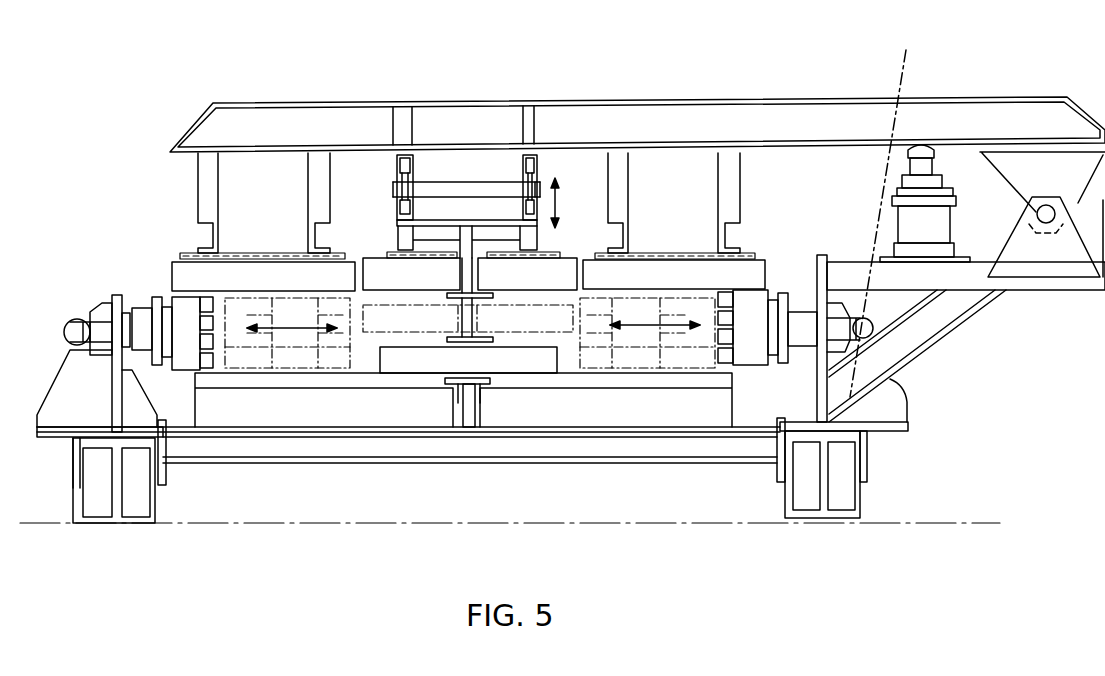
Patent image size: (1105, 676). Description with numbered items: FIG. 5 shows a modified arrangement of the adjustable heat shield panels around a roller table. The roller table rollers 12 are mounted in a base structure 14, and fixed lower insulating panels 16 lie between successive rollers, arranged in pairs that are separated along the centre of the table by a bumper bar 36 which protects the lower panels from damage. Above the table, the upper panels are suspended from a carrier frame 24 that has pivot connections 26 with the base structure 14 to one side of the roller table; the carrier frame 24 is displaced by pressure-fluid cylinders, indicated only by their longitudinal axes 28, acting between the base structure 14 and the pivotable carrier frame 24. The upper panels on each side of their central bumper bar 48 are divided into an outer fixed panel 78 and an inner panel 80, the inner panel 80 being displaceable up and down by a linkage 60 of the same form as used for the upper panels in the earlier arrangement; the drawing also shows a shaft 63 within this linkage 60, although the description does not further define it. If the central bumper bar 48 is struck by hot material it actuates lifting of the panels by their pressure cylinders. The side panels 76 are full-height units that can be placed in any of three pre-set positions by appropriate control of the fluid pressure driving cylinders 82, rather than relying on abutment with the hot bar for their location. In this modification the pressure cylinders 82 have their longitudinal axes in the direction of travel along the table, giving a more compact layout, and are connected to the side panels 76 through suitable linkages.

The roller table rollers 12 is at (408, 376).
The base structure 14 is at (870, 500).
The lower insulating panels 16 is at (316, 418).
The carrier frame 24 is at (735, 98).
The pivot connections 26 is at (1048, 224).
The longitudinal axes of pressure-fluid cylinders 28 is at (900, 72).
The bumper bar 36 is at (447, 382).
The central bumper bar 48 is at (492, 297).
The linkage 60 is at (538, 178).
The shaft 63 is at (452, 192).
The side panels 76 is at (187, 357).
The outer fixed panel 78 is at (266, 278).
The inner panel 80 is at (388, 276).
The pressure cylinders 82 is at (78, 319).